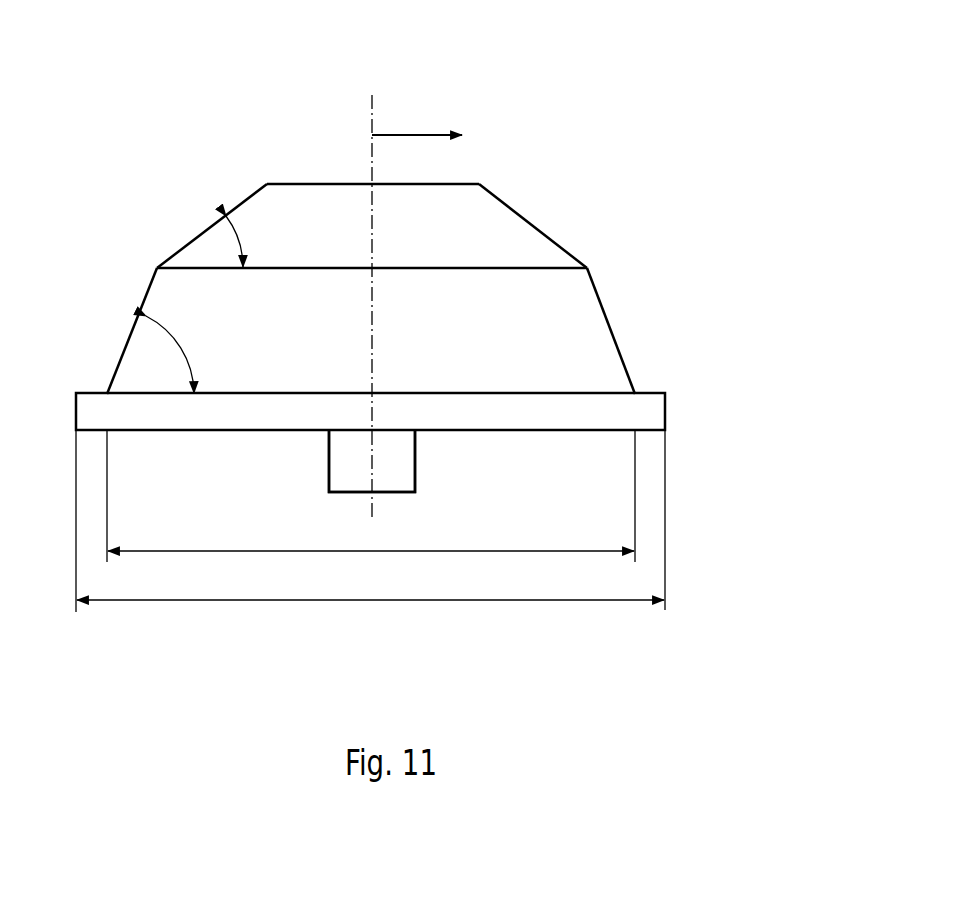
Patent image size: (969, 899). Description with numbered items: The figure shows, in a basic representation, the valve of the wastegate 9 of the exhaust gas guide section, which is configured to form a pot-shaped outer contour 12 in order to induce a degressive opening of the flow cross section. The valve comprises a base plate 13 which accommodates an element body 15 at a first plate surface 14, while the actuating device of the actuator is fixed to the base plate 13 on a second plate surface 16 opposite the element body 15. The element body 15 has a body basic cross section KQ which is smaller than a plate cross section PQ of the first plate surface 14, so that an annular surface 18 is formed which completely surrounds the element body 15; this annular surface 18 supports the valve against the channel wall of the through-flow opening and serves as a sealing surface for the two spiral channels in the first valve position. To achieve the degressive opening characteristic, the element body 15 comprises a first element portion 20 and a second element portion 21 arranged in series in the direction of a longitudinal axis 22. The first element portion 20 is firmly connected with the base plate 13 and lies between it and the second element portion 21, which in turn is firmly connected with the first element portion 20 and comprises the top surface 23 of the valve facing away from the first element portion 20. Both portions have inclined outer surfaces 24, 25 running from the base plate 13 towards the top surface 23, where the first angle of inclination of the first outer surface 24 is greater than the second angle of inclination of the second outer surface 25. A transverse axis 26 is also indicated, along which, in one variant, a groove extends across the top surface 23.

The wastegate 9 is at (684, 142).
The pot-shaped outer contour 12 is at (594, 275).
The base plate 13 is at (670, 417).
The first plate surface 14 is at (505, 392).
The element body 15 is at (457, 319).
The second plate surface 16 is at (590, 432).
The annular surface 18 is at (372, 461).
The first element portion 20 is at (620, 345).
The second element portion 21 is at (528, 217).
The longitudinal axis 22 is at (370, 103).
The top surface 23 is at (320, 180).
The first outer surface 24 is at (130, 332).
The second outer surface 25 is at (208, 222).
The transverse axis 26 is at (410, 133).
The body basic cross section KQ is at (245, 550).
The plate cross section PQ is at (250, 600).